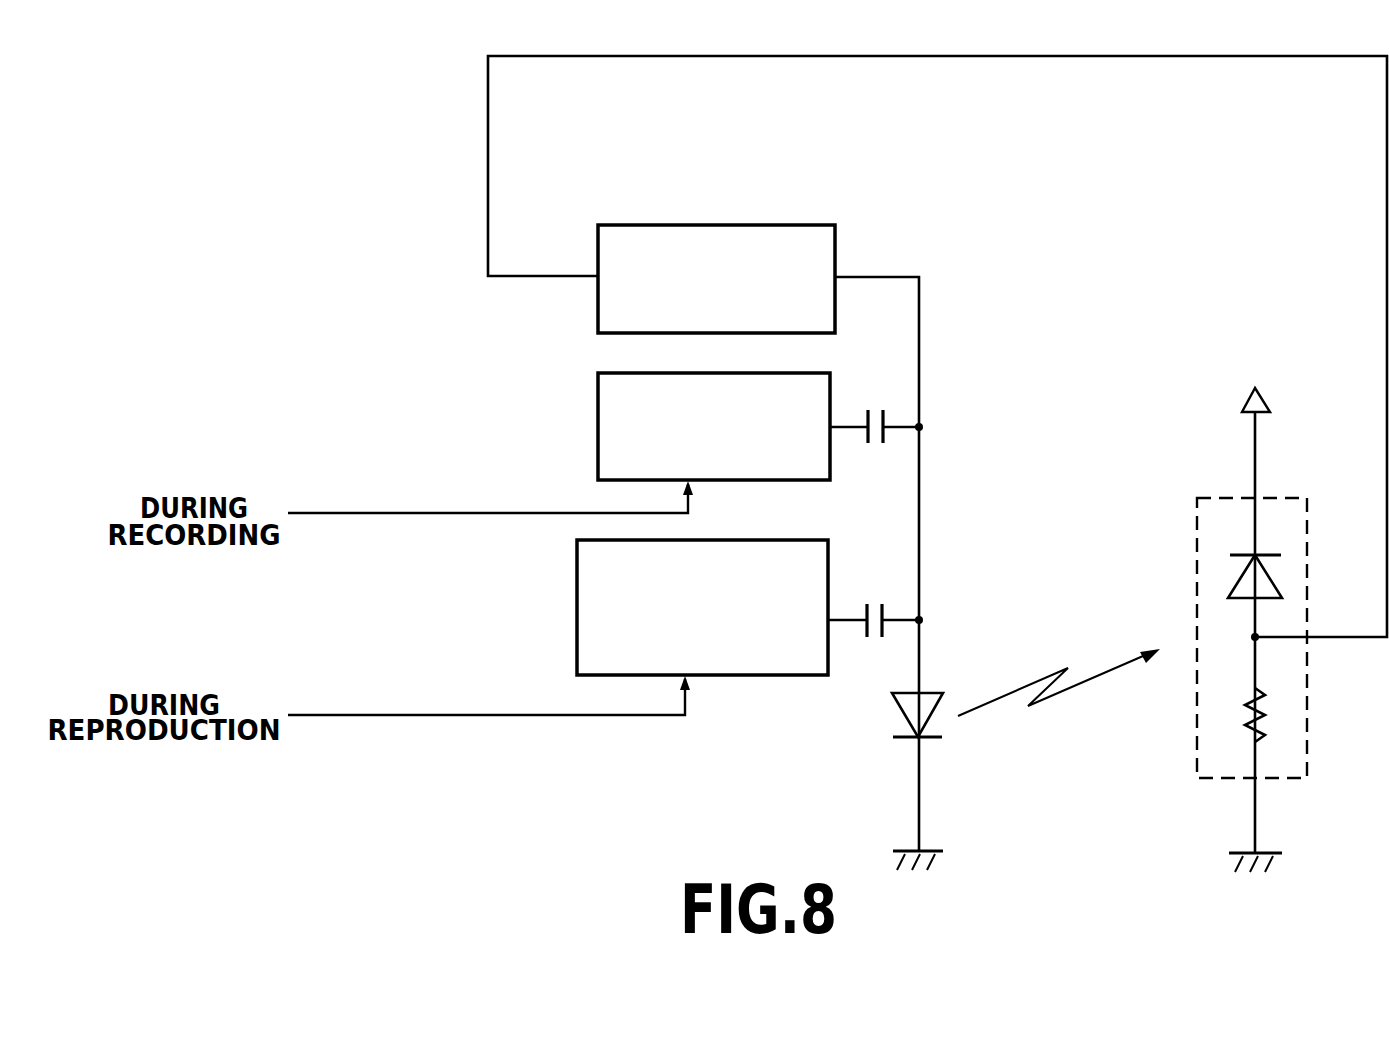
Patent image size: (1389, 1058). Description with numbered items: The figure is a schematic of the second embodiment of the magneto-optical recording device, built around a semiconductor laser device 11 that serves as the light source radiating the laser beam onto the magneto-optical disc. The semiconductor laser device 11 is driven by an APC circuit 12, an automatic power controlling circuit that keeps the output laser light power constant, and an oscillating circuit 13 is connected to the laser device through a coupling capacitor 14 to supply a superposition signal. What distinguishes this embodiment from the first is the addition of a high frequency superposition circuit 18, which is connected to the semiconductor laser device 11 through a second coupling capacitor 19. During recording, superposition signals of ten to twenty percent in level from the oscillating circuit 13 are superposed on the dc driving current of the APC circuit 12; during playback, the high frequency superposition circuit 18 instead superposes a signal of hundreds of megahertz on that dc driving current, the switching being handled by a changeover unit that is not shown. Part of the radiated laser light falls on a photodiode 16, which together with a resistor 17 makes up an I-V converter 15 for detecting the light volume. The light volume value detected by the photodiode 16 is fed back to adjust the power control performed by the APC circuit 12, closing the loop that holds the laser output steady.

The semiconductor laser device 11 is at (898, 722).
The APC circuit 12 is at (789, 224).
The oscillating circuit 13 is at (788, 481).
The coupling capacitor 14 is at (876, 405).
The I-V converter 15 is at (1210, 498).
The photodiode 16 is at (1238, 582).
The resistor 17 is at (1264, 705).
The high frequency superposition circuit 18 is at (782, 676).
The coupling capacitor 19 is at (876, 600).